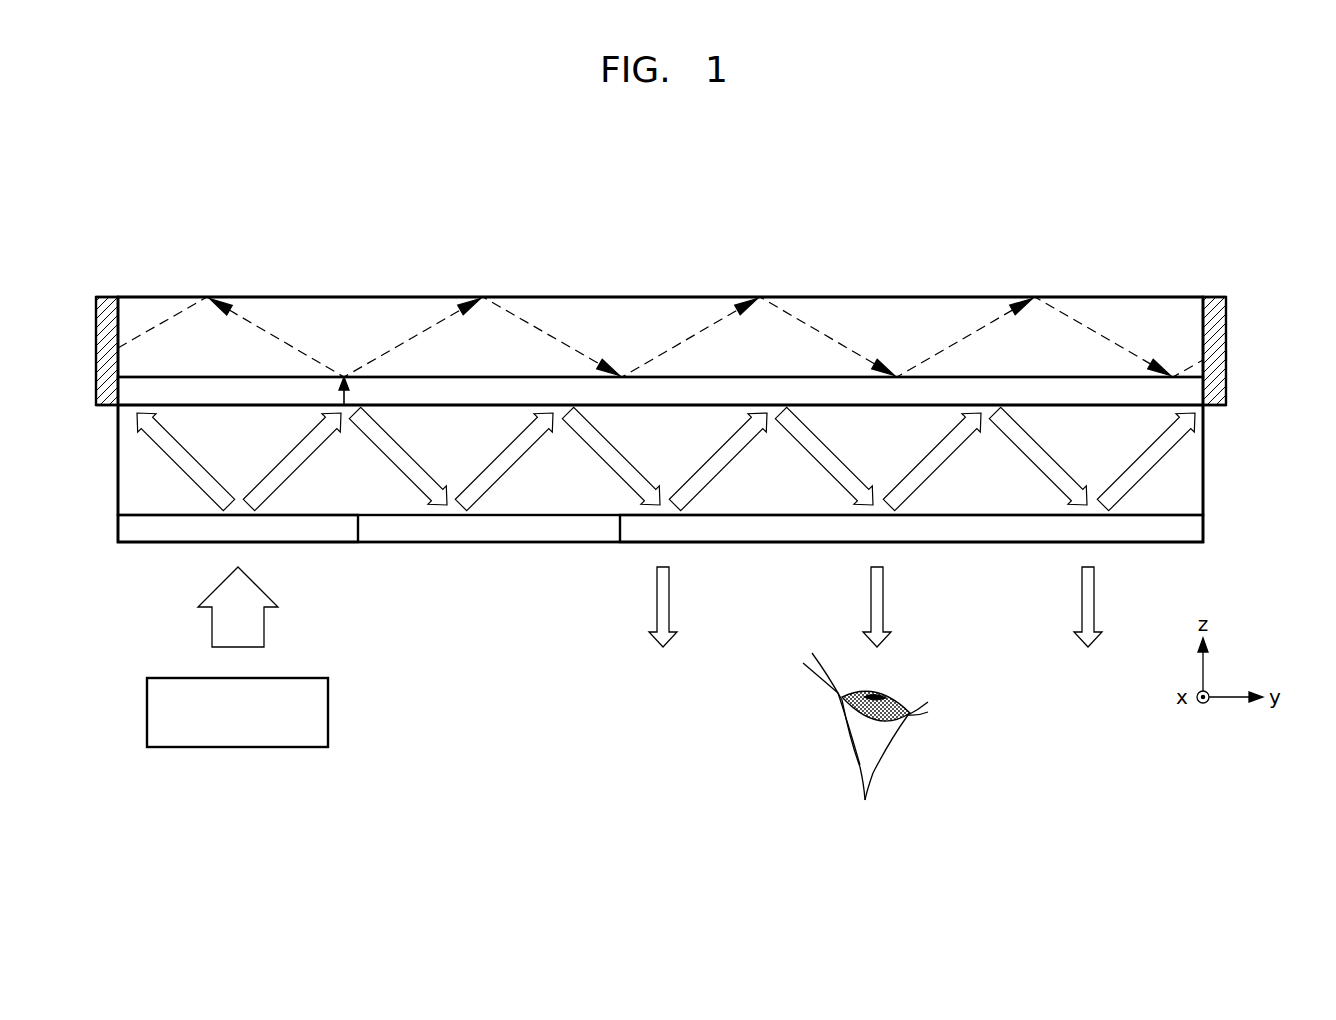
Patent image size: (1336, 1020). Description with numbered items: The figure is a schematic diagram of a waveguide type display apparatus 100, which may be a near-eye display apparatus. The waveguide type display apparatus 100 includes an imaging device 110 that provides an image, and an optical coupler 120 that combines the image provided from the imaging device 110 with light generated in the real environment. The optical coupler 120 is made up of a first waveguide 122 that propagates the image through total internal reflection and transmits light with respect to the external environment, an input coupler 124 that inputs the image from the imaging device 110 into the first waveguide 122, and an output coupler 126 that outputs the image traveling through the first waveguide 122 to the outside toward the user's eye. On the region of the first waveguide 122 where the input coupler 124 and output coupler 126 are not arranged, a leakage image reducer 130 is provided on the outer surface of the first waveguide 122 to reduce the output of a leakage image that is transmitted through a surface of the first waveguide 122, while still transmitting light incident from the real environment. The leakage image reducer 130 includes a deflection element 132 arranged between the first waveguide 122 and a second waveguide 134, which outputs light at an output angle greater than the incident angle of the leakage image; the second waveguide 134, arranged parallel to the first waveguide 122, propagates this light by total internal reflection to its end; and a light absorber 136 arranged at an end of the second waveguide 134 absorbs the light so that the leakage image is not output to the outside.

The waveguide type display apparatus 100 is at (1263, 124).
The imaging device 110 is at (238, 748).
The optical coupler 120 is at (660, 566).
The first waveguide 122 is at (490, 506).
The input coupler 124 is at (351, 528).
The output coupler 126 is at (876, 591).
The leakage image reducer 130 is at (667, 288).
The deflection element 132 is at (660, 318).
The second waveguide 134 is at (1104, 315).
The light absorber 136 is at (1214, 315).